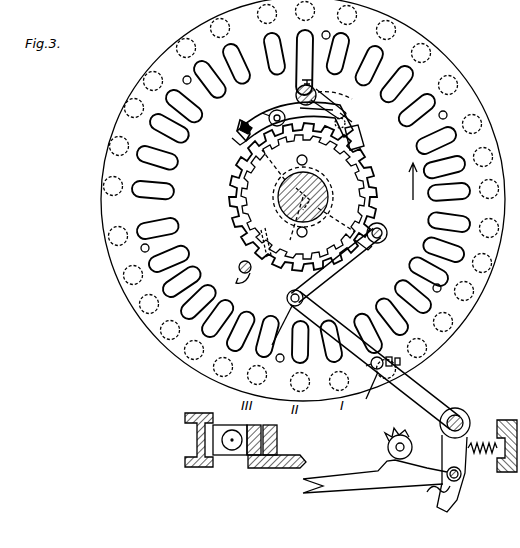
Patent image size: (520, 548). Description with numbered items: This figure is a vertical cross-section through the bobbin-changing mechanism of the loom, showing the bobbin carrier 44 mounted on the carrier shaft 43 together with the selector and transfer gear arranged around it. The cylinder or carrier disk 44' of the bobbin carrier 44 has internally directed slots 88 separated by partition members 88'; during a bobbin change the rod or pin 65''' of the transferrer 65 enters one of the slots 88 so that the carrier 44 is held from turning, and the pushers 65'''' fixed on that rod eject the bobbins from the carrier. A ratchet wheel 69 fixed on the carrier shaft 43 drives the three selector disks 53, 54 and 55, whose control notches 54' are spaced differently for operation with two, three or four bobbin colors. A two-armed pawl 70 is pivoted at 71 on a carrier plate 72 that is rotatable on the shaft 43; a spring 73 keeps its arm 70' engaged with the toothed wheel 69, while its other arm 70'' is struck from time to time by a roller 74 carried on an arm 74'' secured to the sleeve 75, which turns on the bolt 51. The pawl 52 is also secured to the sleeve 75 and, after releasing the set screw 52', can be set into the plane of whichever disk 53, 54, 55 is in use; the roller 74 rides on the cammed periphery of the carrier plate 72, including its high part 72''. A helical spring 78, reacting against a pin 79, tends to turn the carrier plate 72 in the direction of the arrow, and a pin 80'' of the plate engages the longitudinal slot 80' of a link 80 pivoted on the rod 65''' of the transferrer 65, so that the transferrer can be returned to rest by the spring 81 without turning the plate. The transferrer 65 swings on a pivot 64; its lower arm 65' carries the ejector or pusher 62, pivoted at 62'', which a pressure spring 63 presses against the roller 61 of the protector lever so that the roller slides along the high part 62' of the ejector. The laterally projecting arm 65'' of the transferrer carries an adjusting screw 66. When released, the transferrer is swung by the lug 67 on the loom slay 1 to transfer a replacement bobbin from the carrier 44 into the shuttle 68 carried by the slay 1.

The loom slay 1 is at (279, 440).
The carrier shaft 43 is at (287, 186).
The bobbin carrier 44 is at (303, 200).
The cylinder (carrier disk) 44' is at (214, 393).
The bolt 51 is at (318, 98).
The pawl 52 is at (349, 110).
The set screw (nose of pawl) 52' is at (321, 61).
The selector disk 53 is at (512, 380).
The selector disk (central control disk) 54 is at (437, 259).
The control notches 54' is at (217, 215).
The selector disk 55 is at (515, 366).
The roller 61 is at (408, 447).
The ejector (pusher) 62 is at (375, 469).
The high part of ejector 62' is at (396, 494).
The pivot of ejector 62'' is at (441, 462).
The pressure spring 63 is at (437, 490).
The pivot 64 is at (457, 416).
The transferrer 65 is at (375, 361).
The lower arm of transferrer 65' is at (467, 473).
The laterally projecting arm 65'' is at (380, 393).
The pin (rod or shaft) of transferrer 65''' is at (275, 295).
The pushers 65'''' is at (266, 323).
The adjusting screw 66 is at (401, 362).
The lug 67 is at (271, 466).
The shuttle 68 is at (236, 457).
The ratchet wheel (toothed gear-control wheel) 69 is at (228, 183).
The two-armed pawl (control pawl) 70 is at (295, 116).
The arm of pawl 70' is at (215, 148).
The arm of pawl 70'' is at (378, 137).
The pivot 71 is at (276, 110).
The carrier plate 72 is at (211, 150).
The high part of carrier plate 72'' is at (280, 89).
The spring 73 is at (240, 127).
The roller 74 is at (371, 113).
The arm 74'' is at (349, 98).
The sleeve 75 is at (311, 86).
The helical spring 78 is at (358, 193).
The pin 79 is at (242, 263).
The link 80 is at (335, 265).
The longitudinal slot of link 80' is at (377, 254).
The pin of carrier plate 80'' is at (398, 228).
The spring 81 is at (479, 446).
The internally directed slots 88 is at (303, 186).
The partition members 88' is at (214, 280).